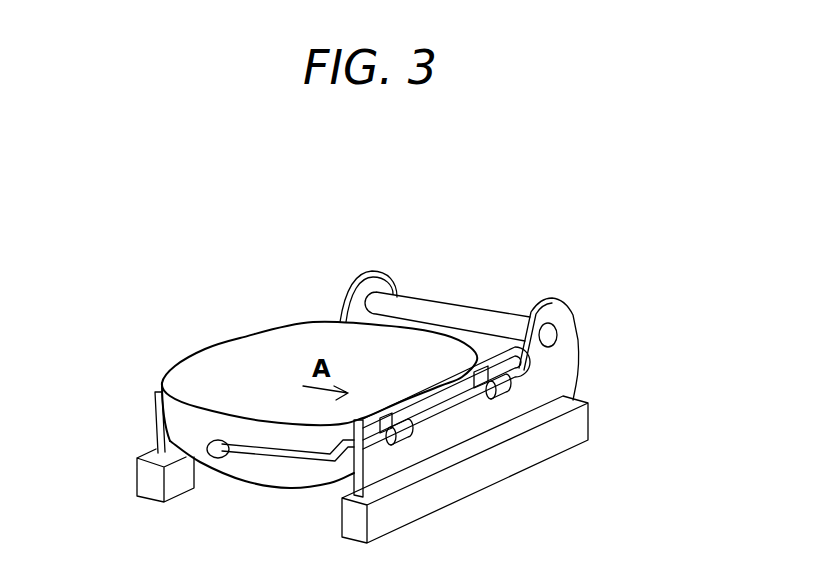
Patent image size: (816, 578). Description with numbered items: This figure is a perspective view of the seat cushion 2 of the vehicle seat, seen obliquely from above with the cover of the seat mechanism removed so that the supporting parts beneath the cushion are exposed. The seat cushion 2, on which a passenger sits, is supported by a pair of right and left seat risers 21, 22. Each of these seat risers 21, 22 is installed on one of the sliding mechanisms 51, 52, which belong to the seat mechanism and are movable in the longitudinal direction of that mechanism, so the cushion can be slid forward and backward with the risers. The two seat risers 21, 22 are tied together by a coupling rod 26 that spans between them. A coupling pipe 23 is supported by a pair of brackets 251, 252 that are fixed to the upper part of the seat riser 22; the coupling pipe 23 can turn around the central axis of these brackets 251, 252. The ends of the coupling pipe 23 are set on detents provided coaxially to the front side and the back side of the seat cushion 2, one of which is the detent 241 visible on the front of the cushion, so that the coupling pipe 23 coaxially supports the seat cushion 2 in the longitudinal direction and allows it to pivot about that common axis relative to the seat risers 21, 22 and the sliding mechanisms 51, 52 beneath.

The seat cushion 2 is at (247, 357).
The seat riser 21 is at (157, 415).
The seat riser 22 is at (562, 366).
The coupling pipe 23 is at (290, 458).
The coupling rod 26 is at (447, 303).
The sliding mechanism 51 is at (150, 483).
The sliding mechanism 52 is at (582, 422).
The detent 241 is at (226, 458).
The bracket 251 is at (410, 437).
The bracket 252 is at (502, 396).